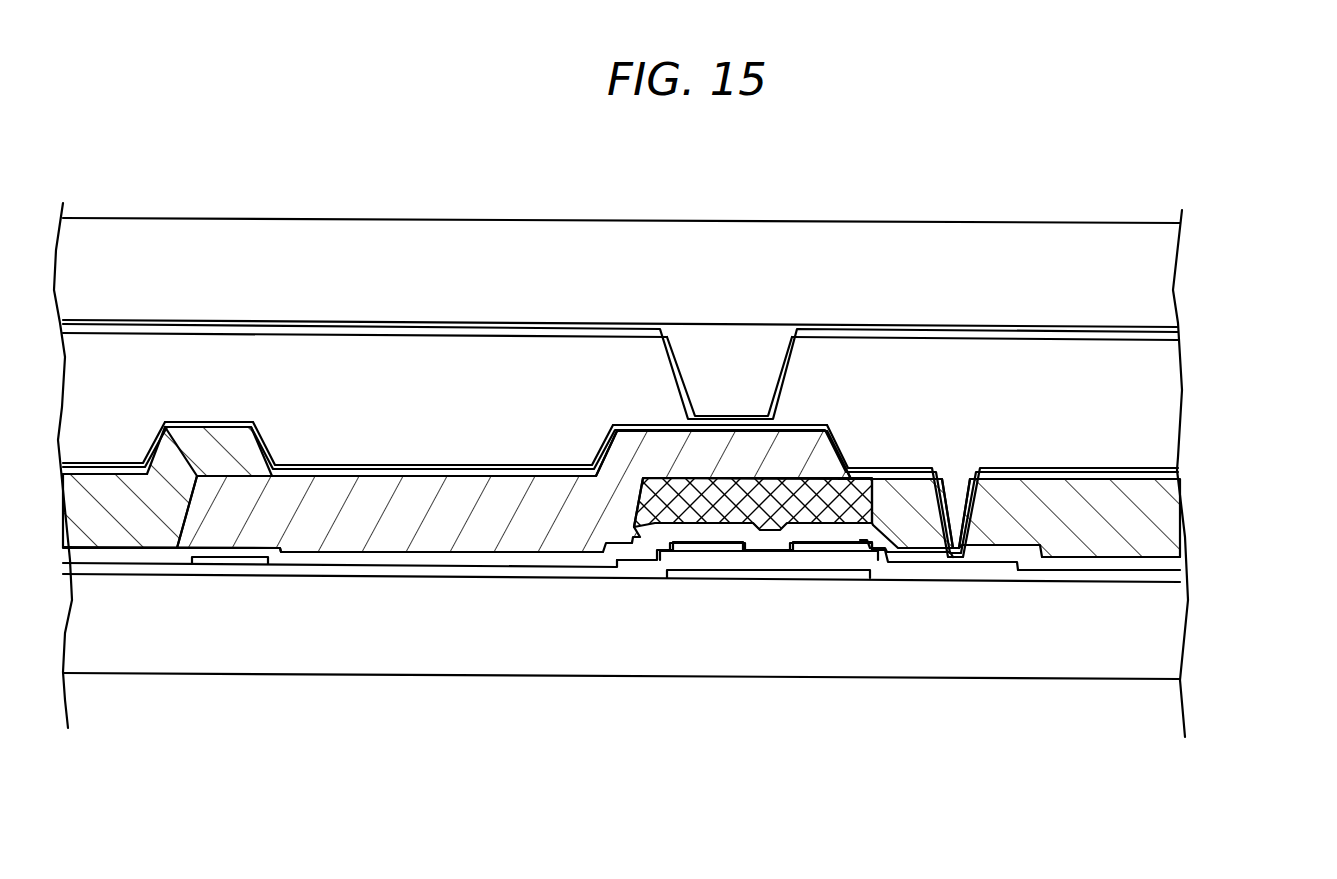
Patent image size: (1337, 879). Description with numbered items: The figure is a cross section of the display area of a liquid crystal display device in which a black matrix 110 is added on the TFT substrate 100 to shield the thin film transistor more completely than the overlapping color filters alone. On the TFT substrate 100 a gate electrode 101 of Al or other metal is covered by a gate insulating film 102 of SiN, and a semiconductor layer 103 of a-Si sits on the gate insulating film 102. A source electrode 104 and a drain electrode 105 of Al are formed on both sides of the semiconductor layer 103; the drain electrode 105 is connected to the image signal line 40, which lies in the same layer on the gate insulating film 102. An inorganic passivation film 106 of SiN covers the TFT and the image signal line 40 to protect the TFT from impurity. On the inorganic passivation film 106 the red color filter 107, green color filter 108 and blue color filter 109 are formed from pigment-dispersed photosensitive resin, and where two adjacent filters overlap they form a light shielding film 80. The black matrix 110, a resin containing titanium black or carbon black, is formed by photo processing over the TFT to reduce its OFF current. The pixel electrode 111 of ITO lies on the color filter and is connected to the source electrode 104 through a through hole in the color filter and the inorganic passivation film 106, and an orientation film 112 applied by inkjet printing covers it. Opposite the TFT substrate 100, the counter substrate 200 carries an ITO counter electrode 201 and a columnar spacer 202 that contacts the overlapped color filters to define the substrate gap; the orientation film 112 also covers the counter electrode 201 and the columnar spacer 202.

The image signal line 40 is at (230, 657).
The light shielding film 80 is at (504, 286).
The TFT substrate 100 is at (670, 470).
The gate electrode 101 is at (768, 666).
The gate insulating film 102 is at (675, 589).
The semiconductor layer 103 is at (769, 656).
The source electrode 104 is at (771, 652).
The drain electrode 105 is at (887, 651).
The inorganic passivation film 106 is at (675, 556).
The red color filter 107 is at (167, 592).
The green color filter 108 is at (514, 594).
The blue color filter 109 is at (1026, 621).
The black matrix 110 is at (777, 620).
The pixel electrode 111 is at (675, 490).
The orientation film 112 is at (675, 445).
The counter substrate 200 is at (1214, 271).
The counter electrode 201 is at (675, 352).
The columnar spacer 202 is at (729, 290).